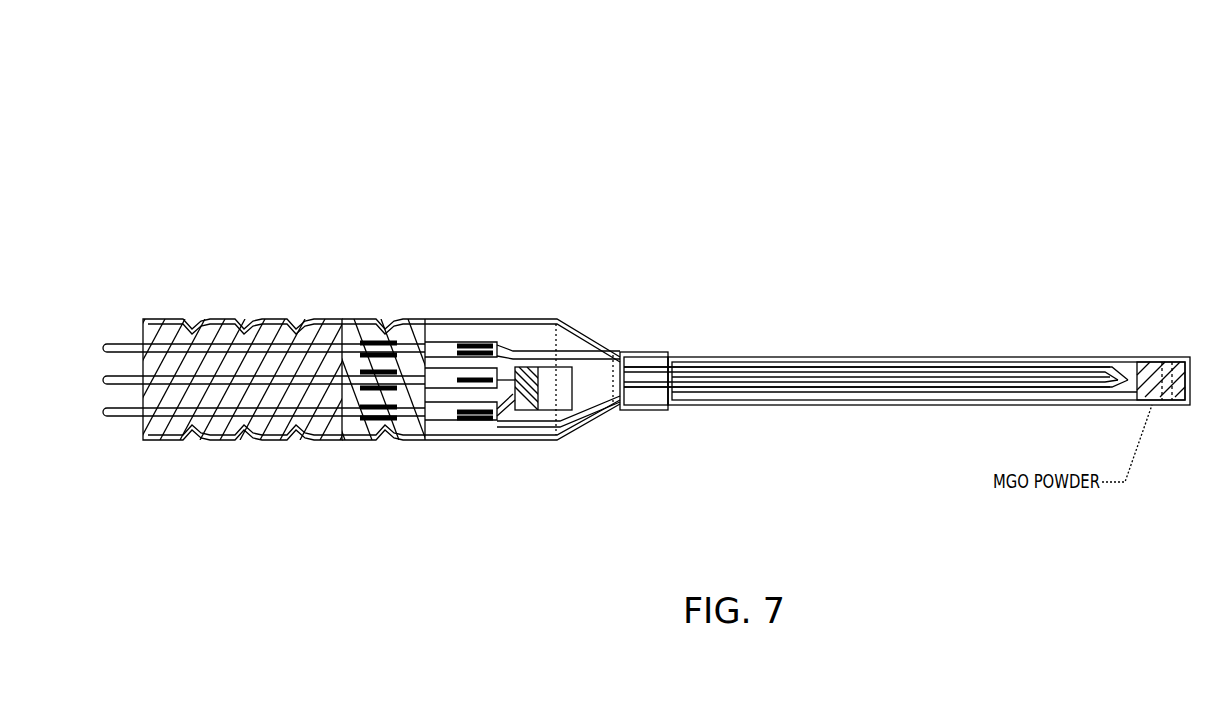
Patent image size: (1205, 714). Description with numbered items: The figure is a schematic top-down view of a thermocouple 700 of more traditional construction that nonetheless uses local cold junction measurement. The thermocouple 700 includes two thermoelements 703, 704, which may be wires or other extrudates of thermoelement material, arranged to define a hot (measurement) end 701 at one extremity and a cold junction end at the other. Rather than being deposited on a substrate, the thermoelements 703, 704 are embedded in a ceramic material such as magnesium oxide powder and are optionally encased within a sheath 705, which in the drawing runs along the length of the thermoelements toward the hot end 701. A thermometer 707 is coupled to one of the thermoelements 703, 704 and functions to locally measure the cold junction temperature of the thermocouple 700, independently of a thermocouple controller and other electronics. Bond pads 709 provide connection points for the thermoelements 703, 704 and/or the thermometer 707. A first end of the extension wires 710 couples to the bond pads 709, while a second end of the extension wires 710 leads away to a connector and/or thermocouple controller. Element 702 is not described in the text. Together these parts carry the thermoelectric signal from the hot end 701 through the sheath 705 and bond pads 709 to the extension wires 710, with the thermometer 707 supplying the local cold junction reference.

The thermocouple 700 is at (562, 103).
The hot end 701 is at (1138, 360).
The lead wires 702 is at (264, 380).
The thermoelement 703 is at (708, 378).
The thermoelement 704 is at (867, 377).
The sheath 705 is at (858, 354).
The thermometer 707 is at (570, 352).
The bond pads 709 is at (442, 345).
The extension wires 710 is at (302, 348).